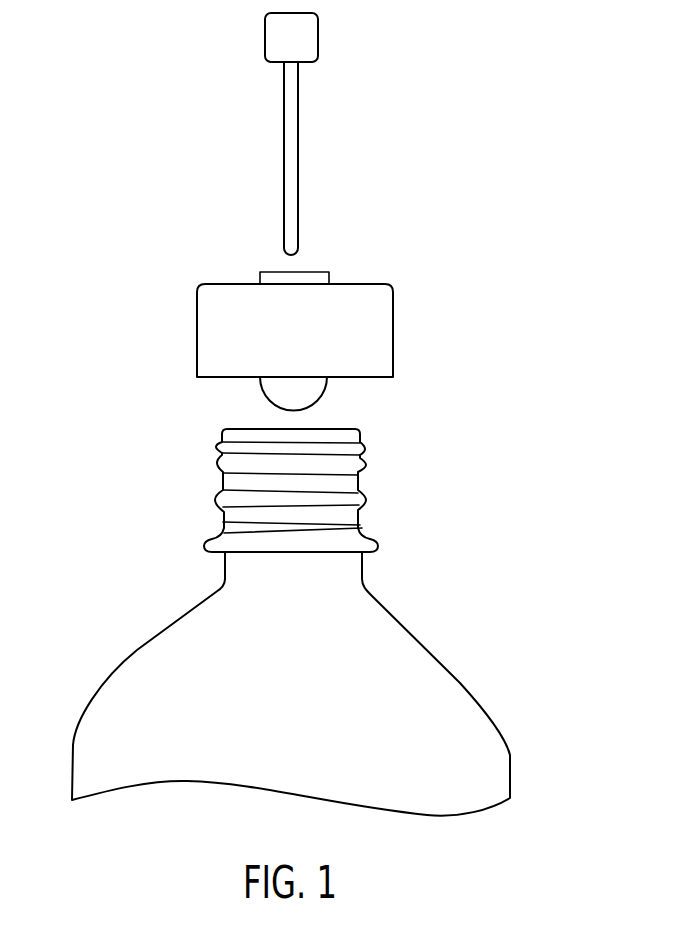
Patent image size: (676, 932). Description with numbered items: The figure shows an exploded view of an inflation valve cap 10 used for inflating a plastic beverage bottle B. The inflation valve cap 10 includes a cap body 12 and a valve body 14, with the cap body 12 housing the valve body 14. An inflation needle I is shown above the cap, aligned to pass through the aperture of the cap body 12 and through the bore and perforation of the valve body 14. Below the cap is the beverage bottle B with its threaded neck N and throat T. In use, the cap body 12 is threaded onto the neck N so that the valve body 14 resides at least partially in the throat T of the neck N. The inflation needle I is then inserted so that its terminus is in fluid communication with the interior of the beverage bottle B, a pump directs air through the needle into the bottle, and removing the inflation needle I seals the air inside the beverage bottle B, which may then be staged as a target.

The inflation needle I is at (325, 138).
The inflation valve cap 10 is at (316, 345).
The cap body 12 is at (213, 323).
The valve body 14 is at (260, 388).
The throat T is at (177, 478).
The neck N is at (294, 495).
The beverage bottle B is at (312, 622).